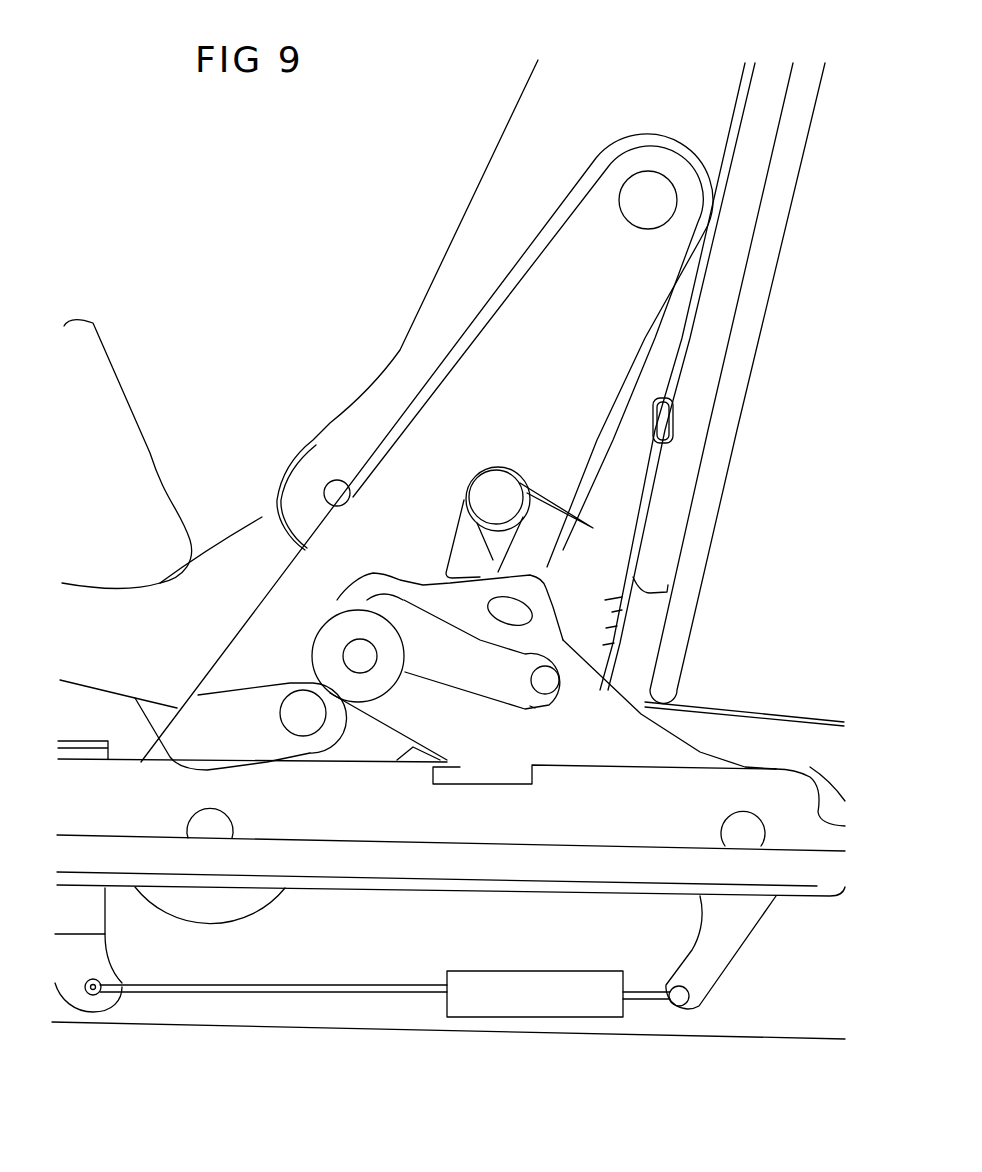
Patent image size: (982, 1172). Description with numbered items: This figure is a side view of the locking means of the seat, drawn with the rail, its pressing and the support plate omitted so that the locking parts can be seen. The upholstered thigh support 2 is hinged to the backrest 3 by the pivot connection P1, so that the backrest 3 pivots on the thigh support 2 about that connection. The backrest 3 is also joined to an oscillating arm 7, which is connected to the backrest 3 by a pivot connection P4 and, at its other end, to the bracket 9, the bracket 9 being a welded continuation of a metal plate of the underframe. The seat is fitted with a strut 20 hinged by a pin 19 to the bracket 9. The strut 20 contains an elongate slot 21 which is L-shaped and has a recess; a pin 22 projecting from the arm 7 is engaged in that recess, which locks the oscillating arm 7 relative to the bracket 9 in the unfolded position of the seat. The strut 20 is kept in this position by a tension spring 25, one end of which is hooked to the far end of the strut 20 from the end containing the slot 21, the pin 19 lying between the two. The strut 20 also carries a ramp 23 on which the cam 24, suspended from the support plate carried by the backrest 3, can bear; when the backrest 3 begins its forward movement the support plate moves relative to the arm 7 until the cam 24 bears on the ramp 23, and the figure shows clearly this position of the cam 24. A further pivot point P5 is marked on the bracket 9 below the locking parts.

The thigh support 2 is at (103, 603).
The backrest 3 is at (430, 302).
The oscillating arm 7 is at (540, 300).
The bracket 9 is at (443, 863).
The pin 19 is at (745, 838).
The strut 20 is at (659, 748).
The elongate slot 21 is at (583, 685).
The pin 22 is at (360, 656).
The ramp 23 is at (480, 577).
The cam 24 is at (450, 545).
The tension spring 25 is at (537, 1017).
The pivot connection P1 is at (337, 493).
The pivot connection P4 is at (652, 195).
The pivot point P5 is at (210, 832).